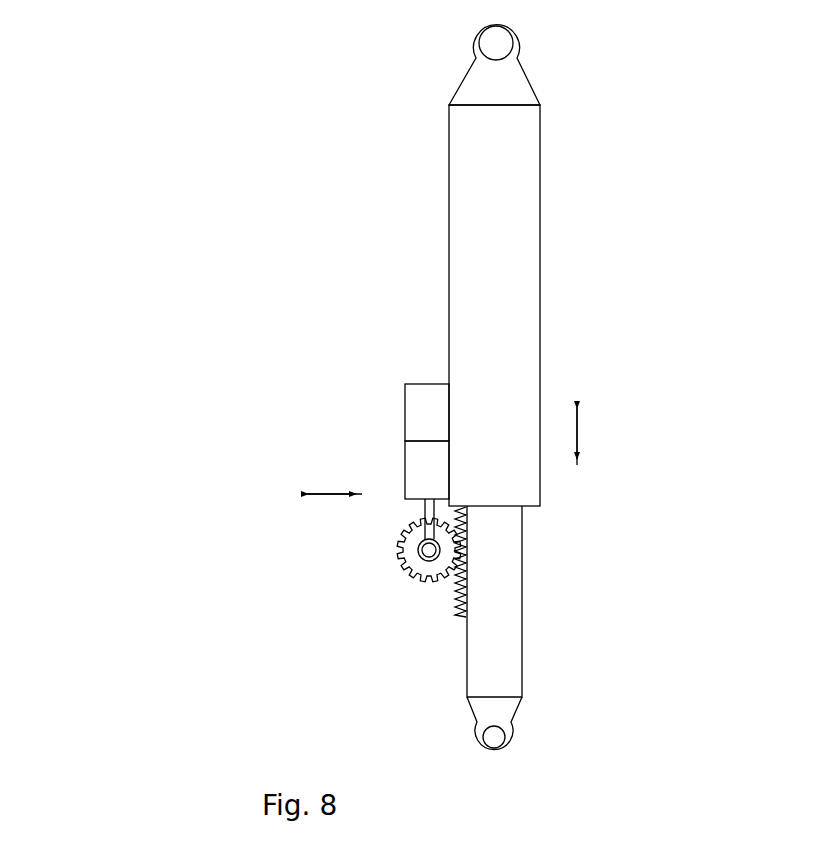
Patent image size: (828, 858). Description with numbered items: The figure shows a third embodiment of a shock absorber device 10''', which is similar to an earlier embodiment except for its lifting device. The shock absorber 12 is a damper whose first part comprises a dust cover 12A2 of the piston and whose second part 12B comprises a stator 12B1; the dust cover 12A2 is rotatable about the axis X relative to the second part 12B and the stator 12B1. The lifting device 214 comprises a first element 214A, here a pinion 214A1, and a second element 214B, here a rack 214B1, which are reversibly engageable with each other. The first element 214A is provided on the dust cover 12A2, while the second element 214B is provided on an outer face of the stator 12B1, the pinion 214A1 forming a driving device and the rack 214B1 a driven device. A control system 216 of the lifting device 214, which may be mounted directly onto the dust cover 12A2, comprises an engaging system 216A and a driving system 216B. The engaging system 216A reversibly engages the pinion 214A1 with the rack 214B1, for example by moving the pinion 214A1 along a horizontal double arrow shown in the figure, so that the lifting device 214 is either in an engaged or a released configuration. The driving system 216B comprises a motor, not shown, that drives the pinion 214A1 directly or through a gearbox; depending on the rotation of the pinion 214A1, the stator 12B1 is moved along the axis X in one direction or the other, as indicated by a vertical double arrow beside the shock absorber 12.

The shock absorber device 10''' is at (370, 387).
The shock absorber 12 is at (595, 213).
The dust cover 12A2 is at (541, 334).
The second part 12B is at (569, 627).
The stator 12B1 is at (522, 617).
The control system 216 is at (273, 383).
The engaging system 216A is at (423, 418).
The driving system 216B is at (405, 472).
The lifting device 214 is at (125, 552).
The first element 214A is at (243, 489).
The pinion 214A1 is at (400, 557).
The second element 214B is at (282, 665).
The rack 214B1 is at (455, 608).